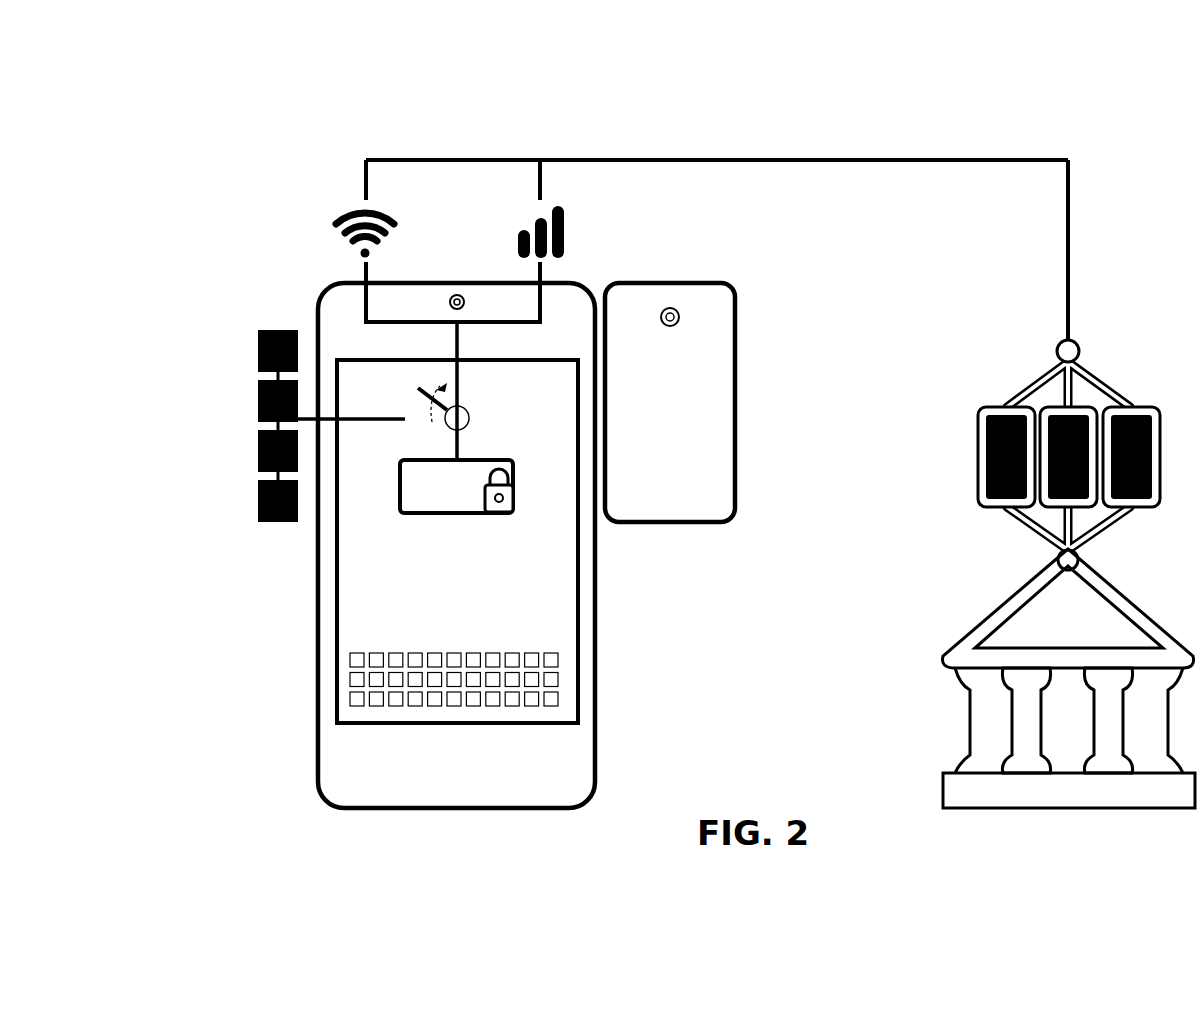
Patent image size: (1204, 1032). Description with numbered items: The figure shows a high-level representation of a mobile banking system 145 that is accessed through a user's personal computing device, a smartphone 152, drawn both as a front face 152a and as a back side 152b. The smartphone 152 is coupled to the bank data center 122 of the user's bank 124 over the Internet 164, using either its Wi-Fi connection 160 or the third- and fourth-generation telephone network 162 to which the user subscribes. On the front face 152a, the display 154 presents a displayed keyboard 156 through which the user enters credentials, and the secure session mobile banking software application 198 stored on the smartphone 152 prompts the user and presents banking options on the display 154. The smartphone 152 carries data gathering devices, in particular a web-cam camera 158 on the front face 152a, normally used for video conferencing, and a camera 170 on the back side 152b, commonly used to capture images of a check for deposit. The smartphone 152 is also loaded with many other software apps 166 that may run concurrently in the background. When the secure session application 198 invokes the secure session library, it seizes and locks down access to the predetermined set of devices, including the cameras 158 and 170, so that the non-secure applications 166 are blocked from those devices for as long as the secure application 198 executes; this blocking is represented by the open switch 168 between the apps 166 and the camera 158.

The mobile banking system 145 is at (784, 224).
The Internet 164 is at (812, 156).
The Wi-Fi connection 160 is at (340, 200).
The 3G/4G telephone network 162 is at (575, 200).
The smartphone 152 is at (503, 565).
The front face 152a is at (290, 775).
The back side 152b is at (765, 385).
The display 154 is at (553, 612).
The web-cam camera 158 is at (443, 302).
The open switch 168 is at (405, 388).
The software apps 166 is at (238, 432).
The secure session mobile banking software application 198 is at (385, 505).
The displayed keyboard 156 is at (398, 645).
The camera 170 is at (688, 303).
The bank data center 122 is at (1020, 365).
The bank 124 is at (928, 640).